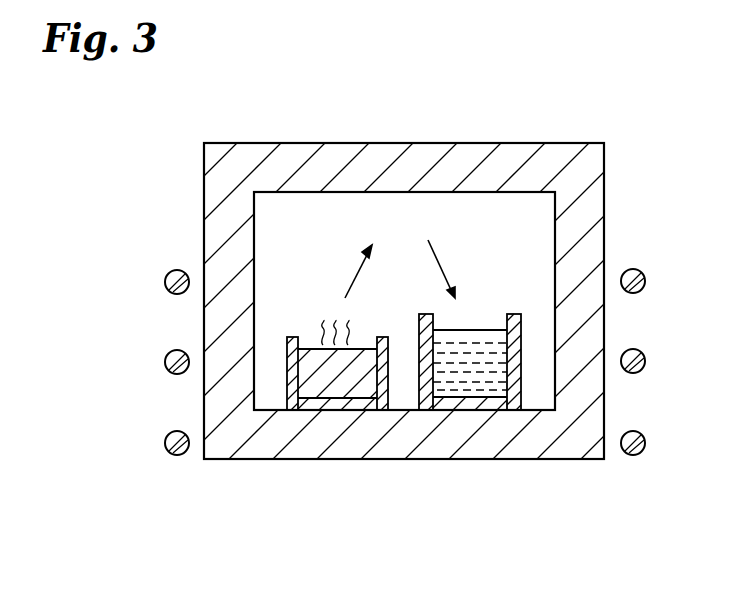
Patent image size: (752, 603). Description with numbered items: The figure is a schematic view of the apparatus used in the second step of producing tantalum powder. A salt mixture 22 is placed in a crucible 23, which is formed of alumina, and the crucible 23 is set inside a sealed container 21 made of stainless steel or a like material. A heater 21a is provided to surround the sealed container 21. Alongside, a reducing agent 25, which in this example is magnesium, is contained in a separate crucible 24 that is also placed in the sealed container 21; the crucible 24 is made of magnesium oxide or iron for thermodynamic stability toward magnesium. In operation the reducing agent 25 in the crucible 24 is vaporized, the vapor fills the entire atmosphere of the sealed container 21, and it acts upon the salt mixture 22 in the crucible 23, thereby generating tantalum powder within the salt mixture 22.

The sealed container 21 is at (595, 203).
The heater 21a is at (645, 282).
The salt mixture 22 is at (493, 367).
The crucible 23 is at (500, 405).
The crucible 24 is at (337, 407).
The reducing agent 25 is at (317, 379).